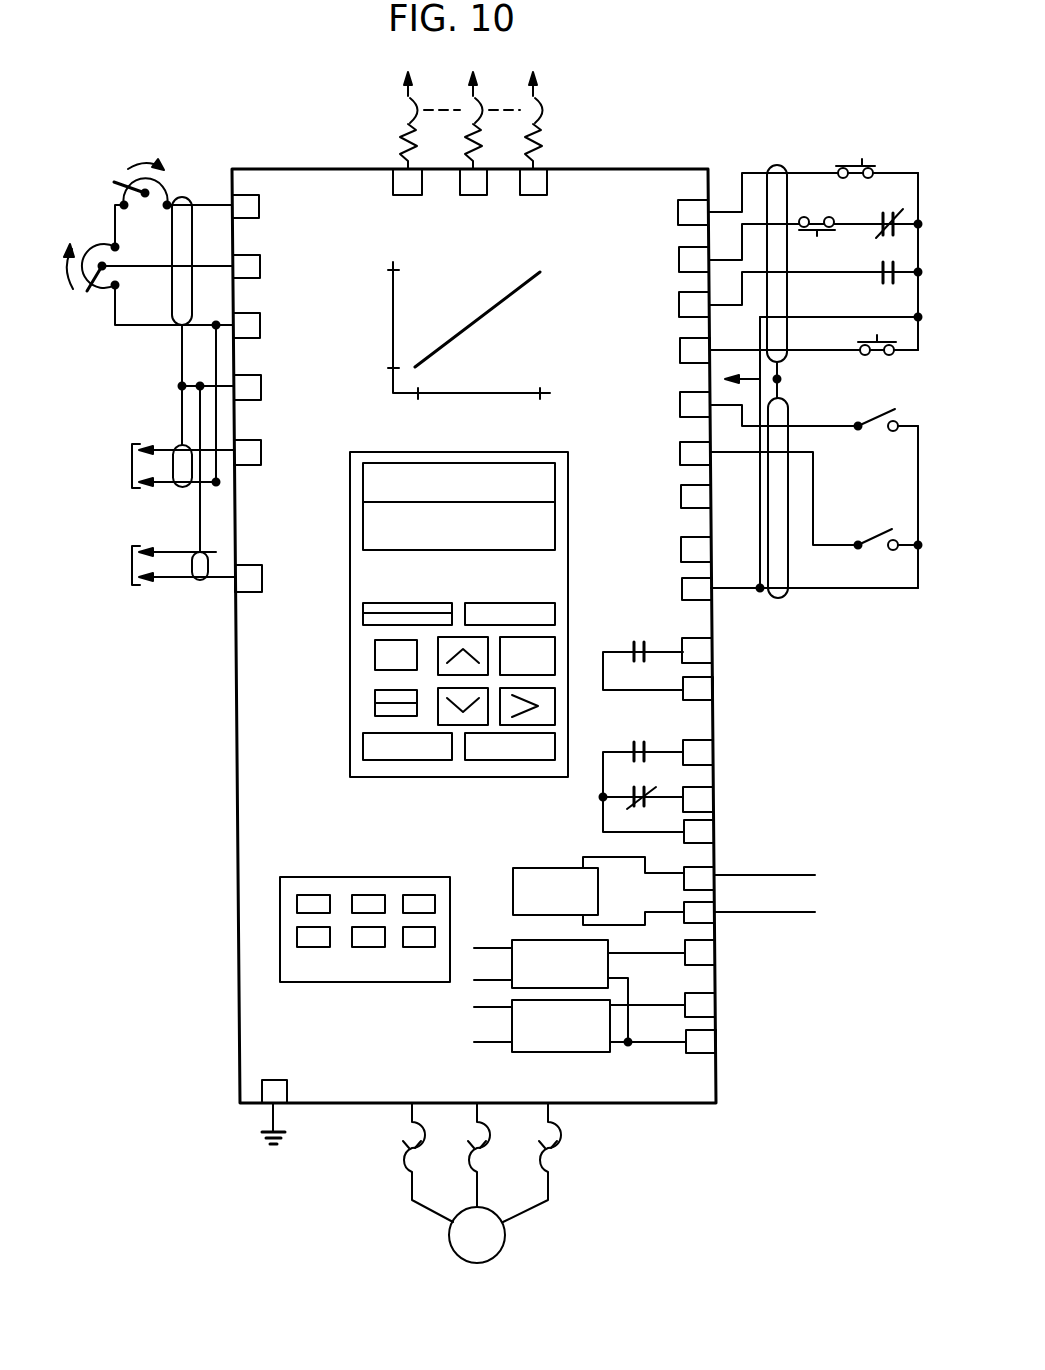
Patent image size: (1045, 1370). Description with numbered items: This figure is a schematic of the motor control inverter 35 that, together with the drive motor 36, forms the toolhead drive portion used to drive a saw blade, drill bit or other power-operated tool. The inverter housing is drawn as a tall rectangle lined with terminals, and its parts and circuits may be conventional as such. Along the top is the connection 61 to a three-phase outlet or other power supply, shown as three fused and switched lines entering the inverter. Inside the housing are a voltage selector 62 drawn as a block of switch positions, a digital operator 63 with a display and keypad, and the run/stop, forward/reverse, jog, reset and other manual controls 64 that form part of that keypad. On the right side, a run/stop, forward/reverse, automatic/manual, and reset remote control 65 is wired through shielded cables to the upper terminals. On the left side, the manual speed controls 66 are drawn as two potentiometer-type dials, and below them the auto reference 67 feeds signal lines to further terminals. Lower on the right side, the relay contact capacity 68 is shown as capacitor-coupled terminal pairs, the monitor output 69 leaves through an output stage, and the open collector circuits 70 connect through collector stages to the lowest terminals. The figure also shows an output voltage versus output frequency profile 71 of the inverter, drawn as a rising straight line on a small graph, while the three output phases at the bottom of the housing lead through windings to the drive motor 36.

The motor control inverter 35 is at (236, 775).
The drive motor 36 is at (466, 1252).
The connection 61 is at (417, 141).
The voltage selector 62 is at (388, 878).
The digital operator 63 is at (440, 494).
The manual controls 64 is at (366, 641).
The remote control 65 is at (824, 401).
The manual speed controls 66 is at (108, 209).
The auto reference 67 is at (160, 514).
The relay contact capacity 68 is at (740, 627).
The monitor output 69 is at (825, 873).
The open collector circuits 70 is at (745, 945).
The output voltage versus output frequency profile 71 is at (439, 309).